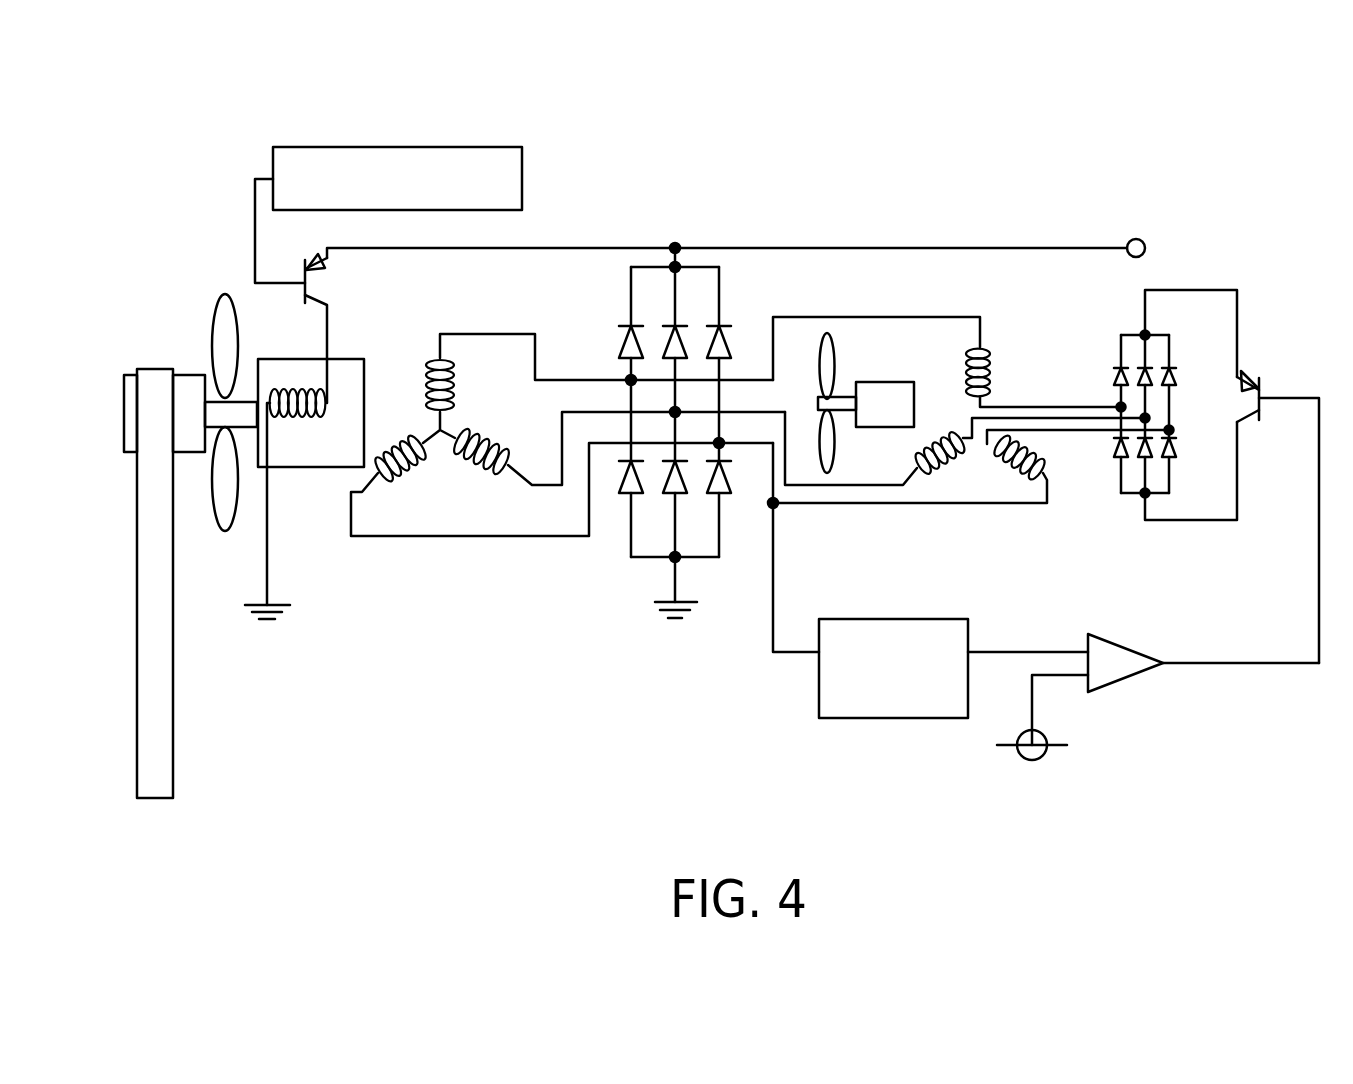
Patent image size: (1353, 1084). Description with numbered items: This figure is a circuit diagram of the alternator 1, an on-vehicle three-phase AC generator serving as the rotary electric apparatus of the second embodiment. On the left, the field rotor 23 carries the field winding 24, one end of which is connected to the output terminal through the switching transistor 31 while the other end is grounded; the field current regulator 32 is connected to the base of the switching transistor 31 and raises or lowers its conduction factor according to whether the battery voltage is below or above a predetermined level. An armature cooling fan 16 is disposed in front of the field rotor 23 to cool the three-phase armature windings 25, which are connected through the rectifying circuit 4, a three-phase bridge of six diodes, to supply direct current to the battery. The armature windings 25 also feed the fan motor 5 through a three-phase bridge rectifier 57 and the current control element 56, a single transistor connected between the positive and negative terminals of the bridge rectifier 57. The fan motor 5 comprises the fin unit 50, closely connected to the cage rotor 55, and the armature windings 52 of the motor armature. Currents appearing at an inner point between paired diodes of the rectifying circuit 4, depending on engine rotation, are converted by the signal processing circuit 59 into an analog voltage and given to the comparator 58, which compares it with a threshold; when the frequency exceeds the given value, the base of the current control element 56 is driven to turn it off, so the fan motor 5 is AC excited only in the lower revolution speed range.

The alternator 1 is at (806, 133).
The rectifying circuit 4 is at (711, 264).
The fan motor 5 is at (880, 314).
The armature cooling fan 16 is at (218, 522).
The field rotor 23 is at (328, 467).
The field winding 24 is at (296, 420).
The armature windings 25 is at (408, 467).
The switching transistor 31 is at (308, 287).
The field current regulator 32 is at (522, 178).
The fin unit 50 is at (826, 473).
The armature windings 52 is at (1013, 470).
The cage rotor 55 is at (885, 420).
The current control element 56 is at (1262, 372).
The three-phase bridge rectifier 57 is at (1165, 333).
The comparator 58 is at (1122, 655).
The signal processing circuit 59 is at (897, 618).